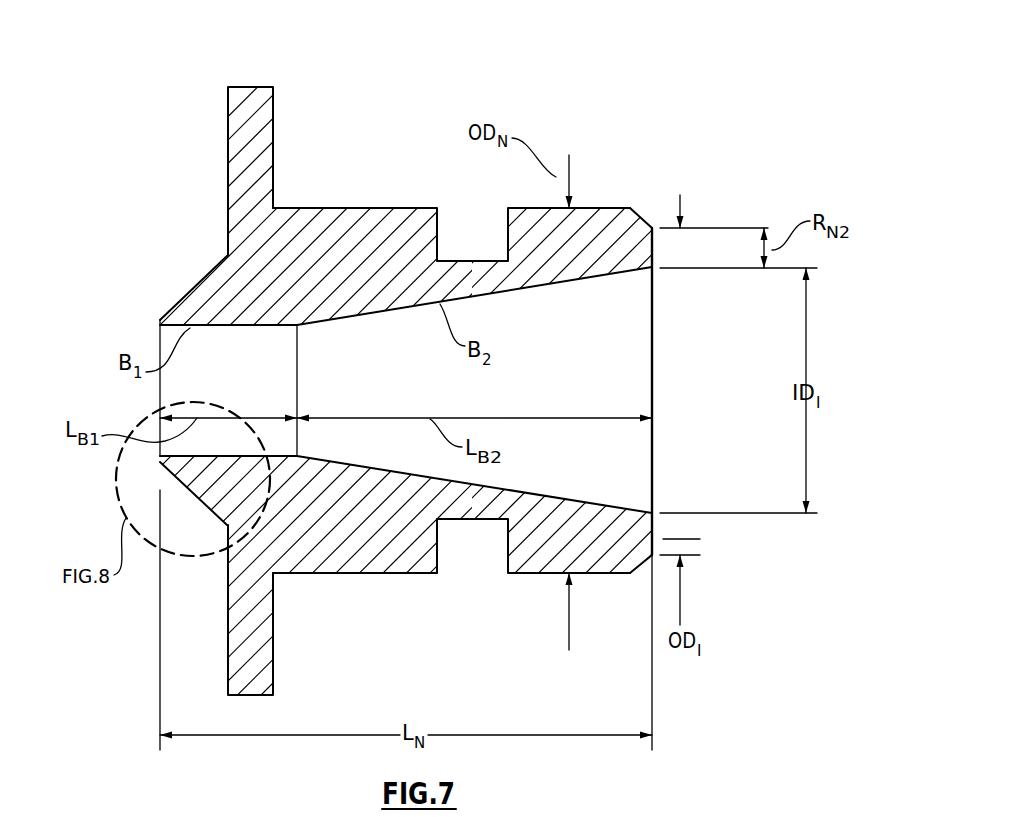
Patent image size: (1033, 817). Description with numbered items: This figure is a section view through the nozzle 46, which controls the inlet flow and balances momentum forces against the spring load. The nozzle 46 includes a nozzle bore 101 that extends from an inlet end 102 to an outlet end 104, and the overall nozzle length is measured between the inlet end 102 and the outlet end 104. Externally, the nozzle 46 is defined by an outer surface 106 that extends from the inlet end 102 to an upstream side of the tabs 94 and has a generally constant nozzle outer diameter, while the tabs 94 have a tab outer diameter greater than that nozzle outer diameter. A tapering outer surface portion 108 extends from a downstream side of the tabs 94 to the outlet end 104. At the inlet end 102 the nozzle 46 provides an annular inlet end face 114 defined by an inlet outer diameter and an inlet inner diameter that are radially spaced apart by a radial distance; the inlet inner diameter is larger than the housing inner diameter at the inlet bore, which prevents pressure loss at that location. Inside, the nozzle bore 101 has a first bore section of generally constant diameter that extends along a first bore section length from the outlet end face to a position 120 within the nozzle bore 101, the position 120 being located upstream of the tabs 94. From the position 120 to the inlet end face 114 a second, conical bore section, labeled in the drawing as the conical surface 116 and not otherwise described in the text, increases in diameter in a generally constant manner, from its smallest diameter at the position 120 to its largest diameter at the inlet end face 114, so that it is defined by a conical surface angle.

The nozzle 46 is at (737, 147).
The tabs 94 is at (240, 117).
The nozzle bore 101 is at (627, 453).
The inlet end 102 is at (652, 226).
The outlet end 104 is at (158, 321).
The outer surface 106 is at (320, 210).
The tapering outer surface portion 108 is at (195, 287).
The inlet end face 114 is at (700, 539).
The tapered bore surface 116 is at (497, 290).
The position 120 is at (325, 325).